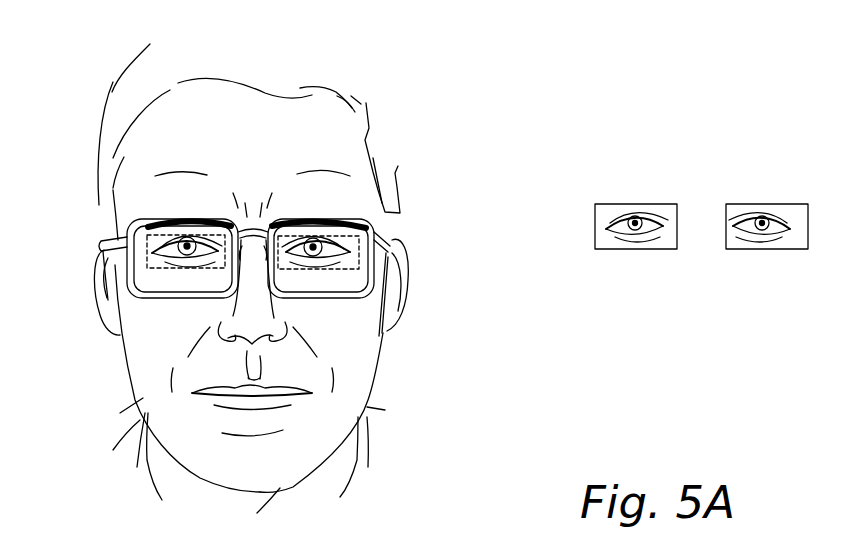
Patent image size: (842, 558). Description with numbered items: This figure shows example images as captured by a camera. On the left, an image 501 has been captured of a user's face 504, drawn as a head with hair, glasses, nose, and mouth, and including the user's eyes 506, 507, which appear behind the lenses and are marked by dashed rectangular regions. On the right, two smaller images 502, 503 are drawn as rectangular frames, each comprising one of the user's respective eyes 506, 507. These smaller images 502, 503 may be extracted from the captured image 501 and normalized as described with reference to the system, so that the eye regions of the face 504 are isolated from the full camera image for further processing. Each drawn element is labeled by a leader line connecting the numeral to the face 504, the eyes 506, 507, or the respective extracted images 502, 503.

The image 501 is at (253, 133).
The smaller image 502 is at (627, 204).
The smaller image 503 is at (765, 204).
The user's face 504 is at (342, 345).
The user's eye 506 is at (185, 250).
The user's eye 507 is at (316, 250).